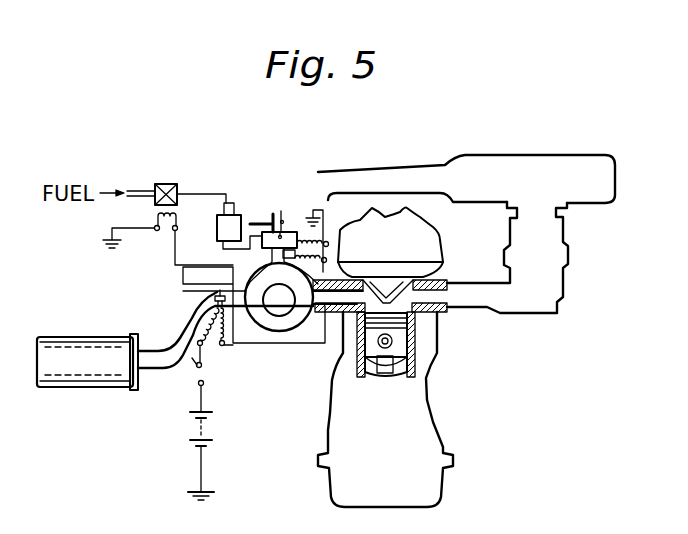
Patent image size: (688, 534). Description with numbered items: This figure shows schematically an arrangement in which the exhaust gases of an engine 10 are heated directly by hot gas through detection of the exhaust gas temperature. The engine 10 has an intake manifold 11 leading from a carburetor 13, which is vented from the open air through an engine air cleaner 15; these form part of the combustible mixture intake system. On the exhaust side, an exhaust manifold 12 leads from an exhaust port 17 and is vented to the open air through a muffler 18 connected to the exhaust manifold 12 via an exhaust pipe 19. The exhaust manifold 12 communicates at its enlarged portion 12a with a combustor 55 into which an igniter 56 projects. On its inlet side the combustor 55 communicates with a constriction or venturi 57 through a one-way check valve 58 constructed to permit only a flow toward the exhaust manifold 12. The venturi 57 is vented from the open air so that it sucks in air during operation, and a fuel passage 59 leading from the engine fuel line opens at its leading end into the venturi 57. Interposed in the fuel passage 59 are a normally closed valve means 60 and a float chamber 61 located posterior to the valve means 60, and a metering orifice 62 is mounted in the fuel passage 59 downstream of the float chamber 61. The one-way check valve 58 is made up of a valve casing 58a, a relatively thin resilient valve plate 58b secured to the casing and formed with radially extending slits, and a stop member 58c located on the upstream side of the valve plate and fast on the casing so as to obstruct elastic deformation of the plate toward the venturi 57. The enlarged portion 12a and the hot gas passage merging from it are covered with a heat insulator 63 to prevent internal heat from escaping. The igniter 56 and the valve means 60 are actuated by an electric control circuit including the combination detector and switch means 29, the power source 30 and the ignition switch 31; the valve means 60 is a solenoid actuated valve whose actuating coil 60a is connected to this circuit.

The engine 10 is at (400, 256).
The intake manifold 11 is at (481, 281).
The exhaust manifold 12 is at (337, 307).
The enlarged portion 12a is at (298, 325).
The carburetor 13 is at (562, 279).
The engine air cleaner 15 is at (543, 162).
The exhaust port 17 is at (340, 340).
The muffler 18 is at (88, 389).
The exhaust pipe 19 is at (162, 374).
The combination detector and switch means 29 is at (212, 300).
The power source 30 is at (193, 420).
The ignition switch 31 is at (204, 384).
The combustor 55 is at (260, 267).
The igniter 56 is at (352, 210).
The venturi 57 is at (277, 211).
The one-way check valve 58 is at (300, 235).
The valve casing 58a is at (250, 221).
The resilient valve plate 58b is at (226, 247).
The stop member 58c is at (283, 231).
The fuel passage 59 is at (140, 190).
The valve means 60 is at (170, 183).
The actuating coil 60a is at (158, 231).
The float chamber 61 is at (222, 214).
The metering orifice 62 is at (226, 246).
The heat insulator 63 is at (276, 331).